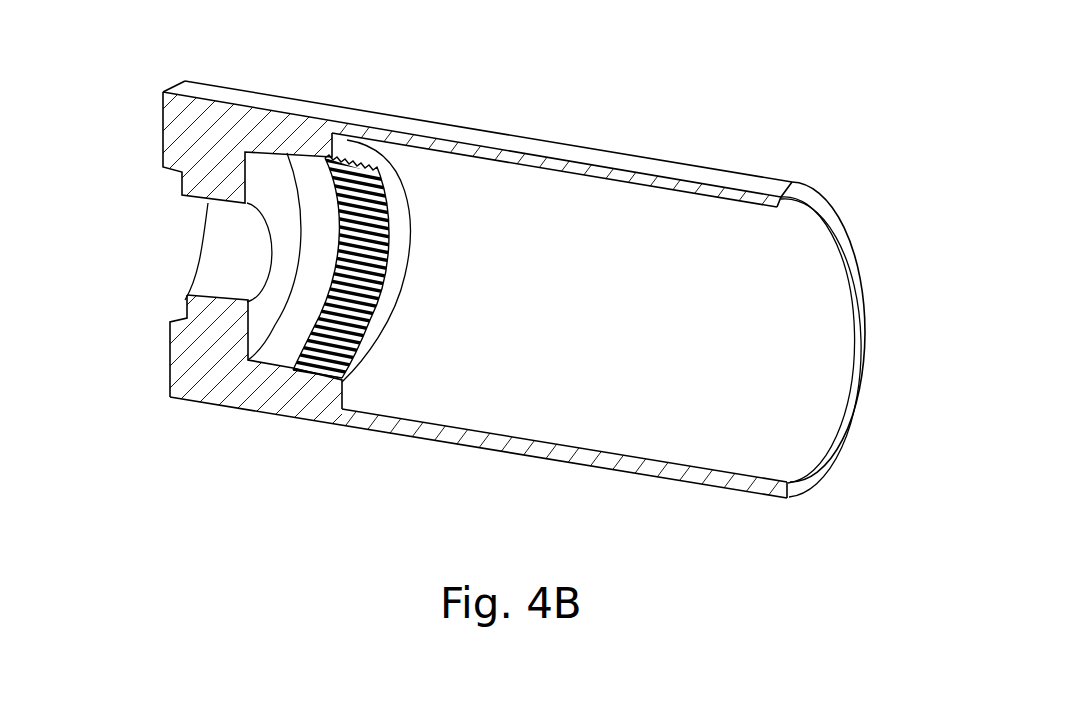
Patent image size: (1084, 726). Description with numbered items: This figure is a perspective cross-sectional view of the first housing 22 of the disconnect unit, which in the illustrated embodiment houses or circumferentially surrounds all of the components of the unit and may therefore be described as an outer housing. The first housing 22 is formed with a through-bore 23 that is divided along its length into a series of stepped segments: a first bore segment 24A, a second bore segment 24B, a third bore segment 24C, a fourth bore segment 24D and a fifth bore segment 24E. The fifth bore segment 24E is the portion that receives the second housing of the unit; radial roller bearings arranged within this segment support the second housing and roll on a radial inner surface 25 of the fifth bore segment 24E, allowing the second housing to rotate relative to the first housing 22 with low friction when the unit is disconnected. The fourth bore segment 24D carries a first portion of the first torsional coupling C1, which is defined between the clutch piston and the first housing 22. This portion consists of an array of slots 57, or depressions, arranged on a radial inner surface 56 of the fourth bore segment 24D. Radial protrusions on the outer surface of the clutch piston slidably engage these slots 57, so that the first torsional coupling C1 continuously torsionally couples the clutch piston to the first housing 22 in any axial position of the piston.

The first housing 22 is at (588, 123).
The through-bore 23 is at (337, 323).
The first bore segment 24A is at (183, 320).
The second bore segment 24B is at (215, 300).
The third bore segment 24C is at (283, 370).
The fourth bore segment 24D is at (341, 382).
The fifth bore segment 24E is at (470, 398).
The radial inner surface 25 is at (692, 460).
The radial inner surface 56 is at (392, 208).
The slots 57 is at (340, 157).
The first torsional coupling C1 is at (378, 108).